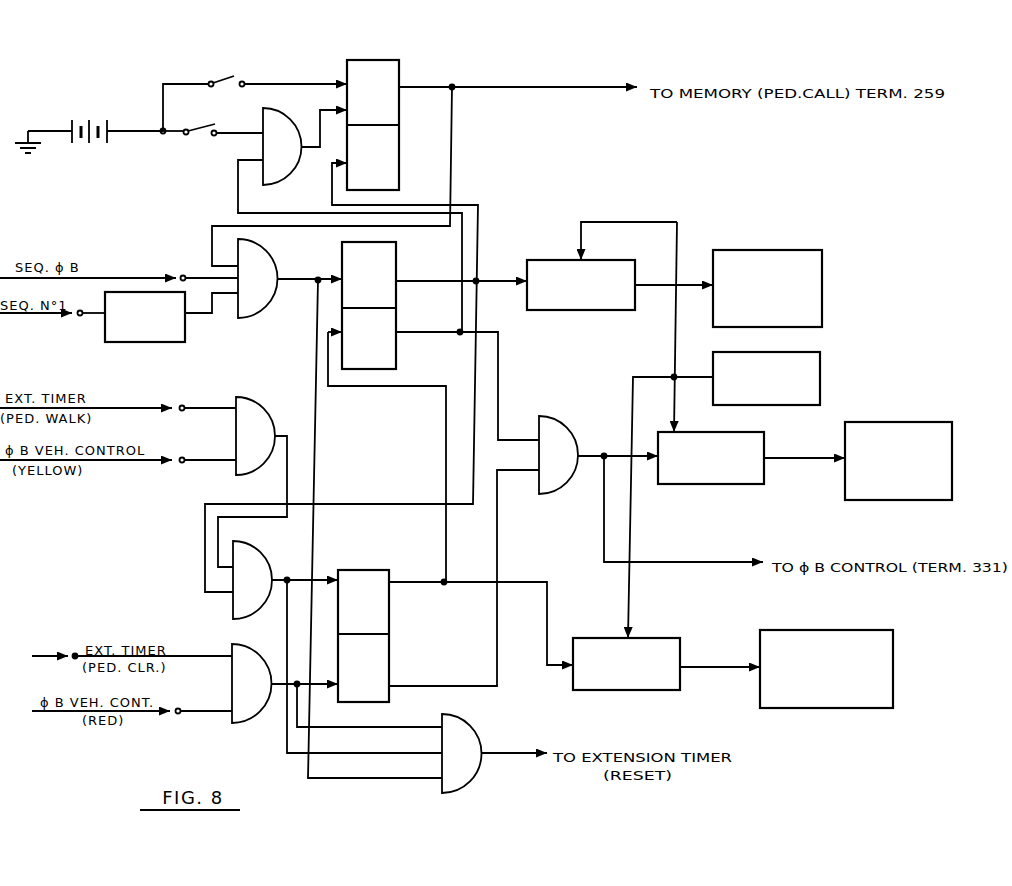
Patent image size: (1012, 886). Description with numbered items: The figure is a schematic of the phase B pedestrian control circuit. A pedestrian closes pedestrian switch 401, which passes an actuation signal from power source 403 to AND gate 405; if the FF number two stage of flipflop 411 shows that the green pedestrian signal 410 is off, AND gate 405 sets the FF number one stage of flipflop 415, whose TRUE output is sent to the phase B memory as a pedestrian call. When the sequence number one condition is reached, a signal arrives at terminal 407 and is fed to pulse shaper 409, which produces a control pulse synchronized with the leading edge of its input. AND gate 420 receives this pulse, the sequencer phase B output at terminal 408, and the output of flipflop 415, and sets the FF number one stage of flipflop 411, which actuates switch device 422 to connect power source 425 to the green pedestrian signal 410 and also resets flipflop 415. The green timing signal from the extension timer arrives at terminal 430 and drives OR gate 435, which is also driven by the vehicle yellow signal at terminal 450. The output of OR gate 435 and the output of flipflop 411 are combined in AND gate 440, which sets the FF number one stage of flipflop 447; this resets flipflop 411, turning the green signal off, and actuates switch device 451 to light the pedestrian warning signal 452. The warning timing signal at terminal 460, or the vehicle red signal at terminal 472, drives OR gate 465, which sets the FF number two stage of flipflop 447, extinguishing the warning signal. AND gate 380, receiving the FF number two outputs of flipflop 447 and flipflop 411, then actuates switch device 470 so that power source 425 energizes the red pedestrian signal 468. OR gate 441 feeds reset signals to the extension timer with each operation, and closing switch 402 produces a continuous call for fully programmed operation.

The AND gate 380 is at (557, 427).
The pedestrian switch 401 is at (197, 127).
The switch 402 is at (232, 75).
The power source 403 is at (100, 118).
The AND gate 405 is at (280, 128).
The terminal 407 is at (78, 318).
The terminal 408 is at (185, 276).
The pulse shaper 409 is at (180, 328).
The green pedestrian signal 410 is at (807, 263).
The flipflop 411 is at (384, 255).
The flipflop 415 is at (395, 68).
The AND gate 420 is at (262, 268).
The switch device 422 is at (606, 306).
The power source 425 is at (808, 367).
The terminal 430 is at (183, 406).
The OR gate 435 is at (251, 407).
The AND gate 440 is at (252, 563).
The OR gate 441 is at (457, 727).
The flipflop 447 is at (378, 574).
The terminal 450 is at (184, 462).
The switch device 451 is at (670, 653).
The pedestrian warning signal 452 is at (877, 658).
The terminal 460 is at (76, 654).
The OR gate 465 is at (240, 716).
The red pedestrian signal 468 is at (927, 446).
The switch device 470 is at (747, 474).
The terminal 472 is at (181, 714).